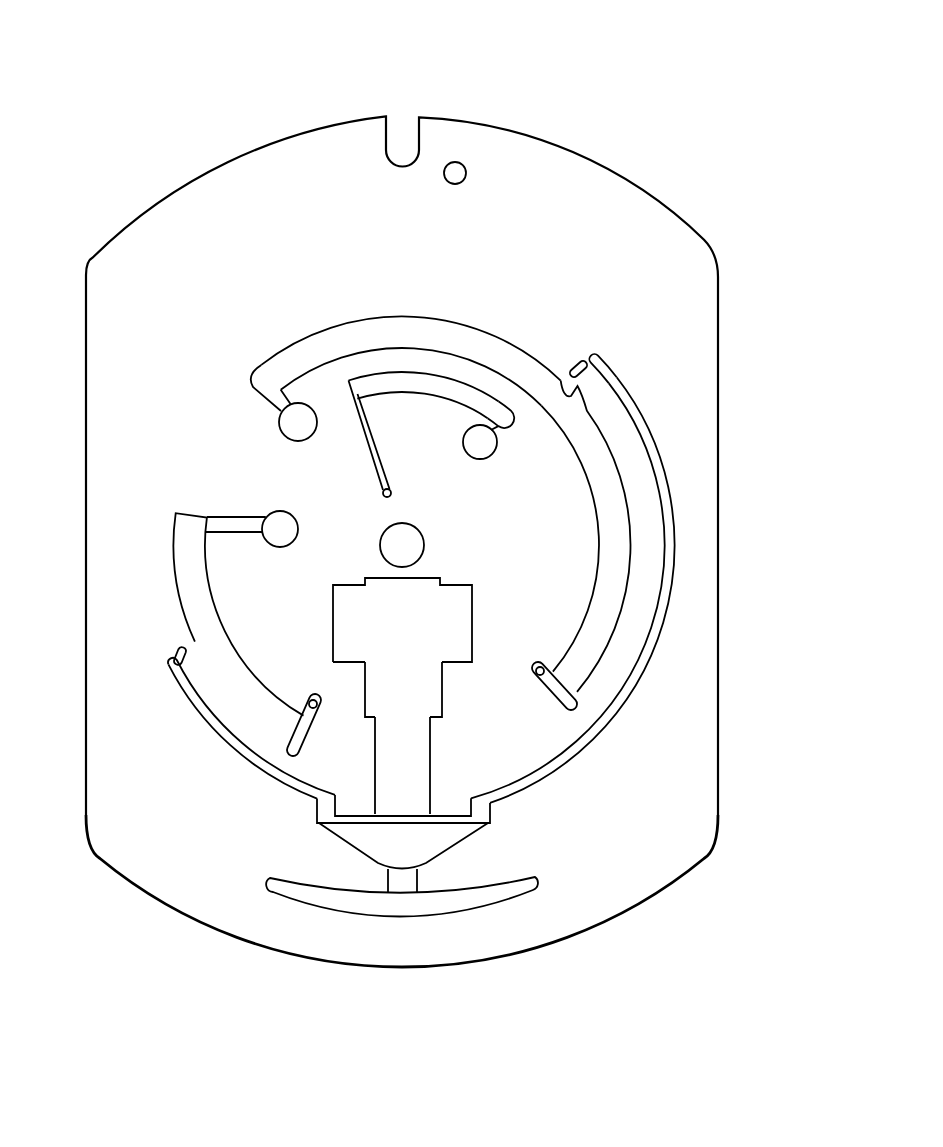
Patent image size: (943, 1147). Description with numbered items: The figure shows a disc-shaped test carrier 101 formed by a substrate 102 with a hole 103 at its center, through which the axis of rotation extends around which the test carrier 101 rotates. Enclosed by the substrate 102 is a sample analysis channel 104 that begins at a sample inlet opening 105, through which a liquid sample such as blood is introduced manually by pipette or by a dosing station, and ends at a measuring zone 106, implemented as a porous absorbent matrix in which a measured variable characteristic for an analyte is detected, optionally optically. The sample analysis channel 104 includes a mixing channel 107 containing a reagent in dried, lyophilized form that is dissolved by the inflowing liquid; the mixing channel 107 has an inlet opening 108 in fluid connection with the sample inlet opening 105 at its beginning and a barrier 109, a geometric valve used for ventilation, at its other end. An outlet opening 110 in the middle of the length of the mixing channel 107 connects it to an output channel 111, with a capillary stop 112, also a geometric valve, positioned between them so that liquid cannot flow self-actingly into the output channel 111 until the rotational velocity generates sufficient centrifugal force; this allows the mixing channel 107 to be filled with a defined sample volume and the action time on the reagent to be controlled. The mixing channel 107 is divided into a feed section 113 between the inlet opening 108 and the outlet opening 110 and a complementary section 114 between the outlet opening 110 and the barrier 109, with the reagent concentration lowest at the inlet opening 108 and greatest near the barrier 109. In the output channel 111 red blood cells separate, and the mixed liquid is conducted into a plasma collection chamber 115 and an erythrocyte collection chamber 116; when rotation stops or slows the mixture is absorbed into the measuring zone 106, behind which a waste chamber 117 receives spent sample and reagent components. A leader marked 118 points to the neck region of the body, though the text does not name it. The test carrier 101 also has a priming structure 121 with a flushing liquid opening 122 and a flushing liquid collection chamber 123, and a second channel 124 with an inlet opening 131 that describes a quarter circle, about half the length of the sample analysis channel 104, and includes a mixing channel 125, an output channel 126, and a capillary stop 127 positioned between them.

The test carrier 101 is at (537, 119).
The substrate 102 is at (300, 153).
The hole 103 is at (410, 547).
The sample analysis channel 104 is at (518, 329).
The sample inlet opening 105 is at (302, 428).
The measuring zone 106 is at (420, 755).
The mixing channel 107 is at (298, 332).
The inlet opening 108 is at (270, 403).
The barrier 109 is at (556, 690).
The outlet opening 110 is at (582, 397).
The output channel 111 is at (660, 471).
The capillary stop 112 is at (582, 363).
The feed section 113 is at (402, 330).
The complementary section 114 is at (612, 593).
The collection chamber 115 is at (443, 846).
The collection chamber 116 is at (461, 898).
The waste chamber 117 is at (462, 622).
The neck 118 is at (432, 697).
The priming structure 121 is at (447, 392).
The flushing liquid opening 122 is at (488, 454).
The flushing liquid collection chamber 123 is at (500, 412).
The second channel 124 is at (307, 642).
The mixing channel 125 is at (207, 612).
The output channel 126 is at (197, 710).
The capillary stop 127 is at (177, 650).
The inlet opening 131 is at (278, 514).